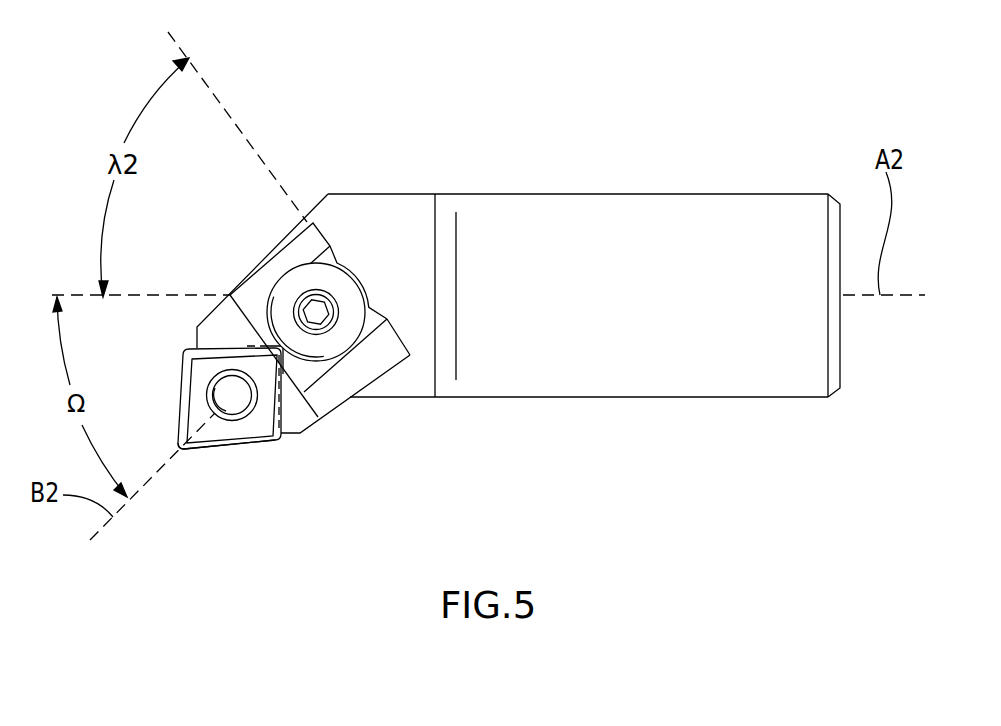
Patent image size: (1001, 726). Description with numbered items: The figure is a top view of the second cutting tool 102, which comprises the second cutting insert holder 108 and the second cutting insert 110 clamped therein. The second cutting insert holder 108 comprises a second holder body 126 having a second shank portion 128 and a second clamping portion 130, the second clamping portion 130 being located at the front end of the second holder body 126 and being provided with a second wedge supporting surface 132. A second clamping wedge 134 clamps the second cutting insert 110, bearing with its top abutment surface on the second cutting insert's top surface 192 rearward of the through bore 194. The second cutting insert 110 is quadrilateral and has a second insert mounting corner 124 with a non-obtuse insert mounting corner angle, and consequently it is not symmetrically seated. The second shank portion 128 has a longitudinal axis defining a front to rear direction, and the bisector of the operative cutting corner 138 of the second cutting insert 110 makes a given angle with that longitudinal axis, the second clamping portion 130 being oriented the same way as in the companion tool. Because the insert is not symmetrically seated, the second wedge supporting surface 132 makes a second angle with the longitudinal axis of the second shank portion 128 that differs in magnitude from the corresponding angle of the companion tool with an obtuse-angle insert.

The second cutting tool 102 is at (471, 310).
The second cutting insert holder 108 is at (516, 193).
The second cutting insert 110 is at (195, 440).
The second insert mounting corner 124 is at (248, 322).
The second holder body 126 is at (584, 316).
The second shank portion 128 is at (641, 372).
The second clamping portion 130 is at (269, 374).
The second wedge supporting surface 132 is at (408, 378).
The second clamping wedge 134 is at (264, 272).
The operative cutting corner 138 is at (183, 453).
The top surface 192 is at (208, 372).
The through bore 194 is at (258, 423).